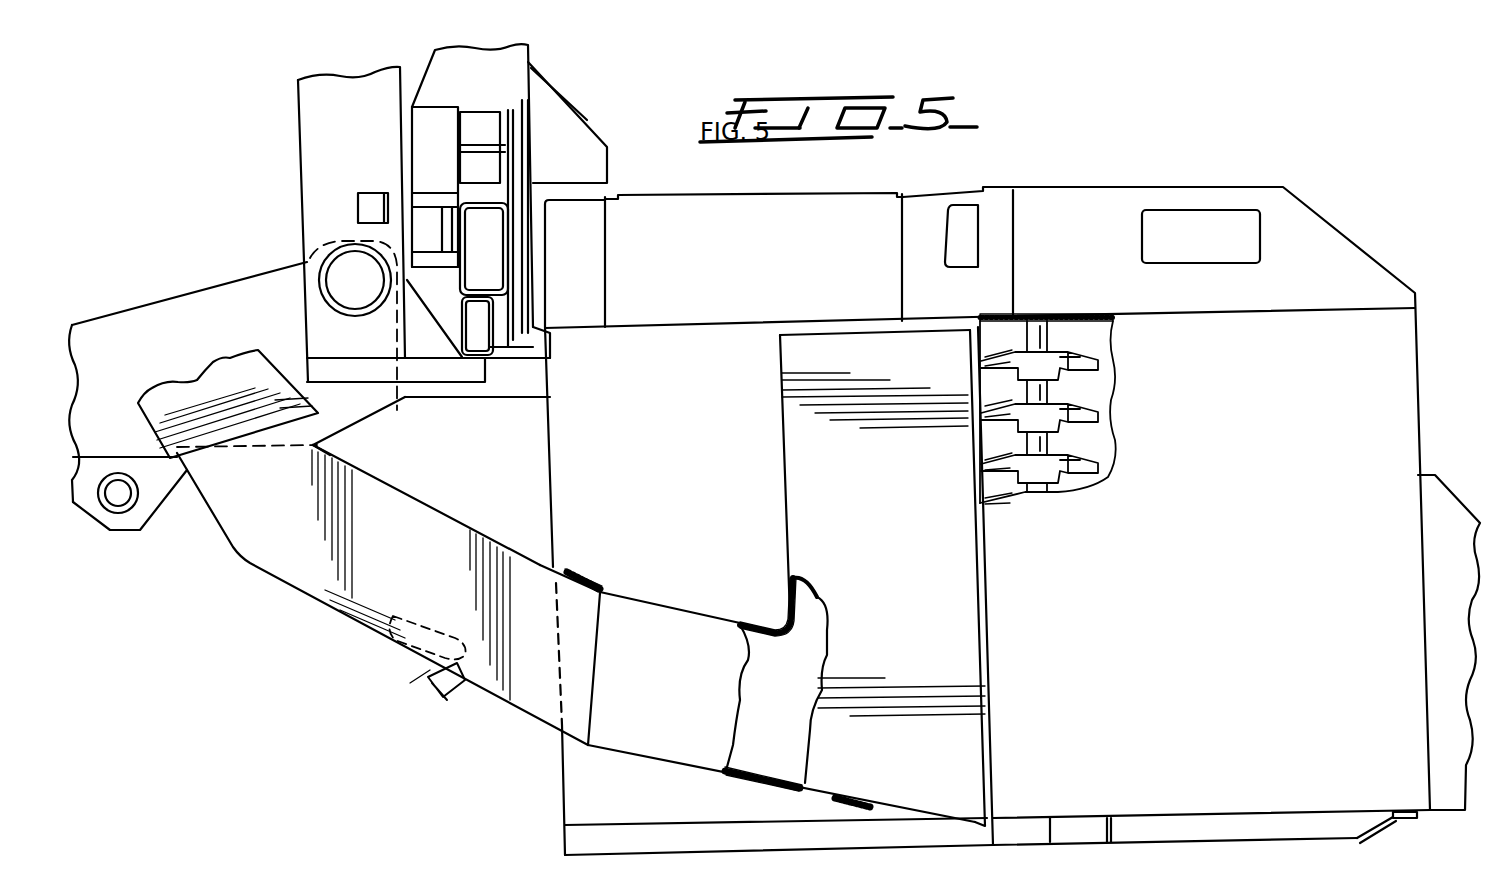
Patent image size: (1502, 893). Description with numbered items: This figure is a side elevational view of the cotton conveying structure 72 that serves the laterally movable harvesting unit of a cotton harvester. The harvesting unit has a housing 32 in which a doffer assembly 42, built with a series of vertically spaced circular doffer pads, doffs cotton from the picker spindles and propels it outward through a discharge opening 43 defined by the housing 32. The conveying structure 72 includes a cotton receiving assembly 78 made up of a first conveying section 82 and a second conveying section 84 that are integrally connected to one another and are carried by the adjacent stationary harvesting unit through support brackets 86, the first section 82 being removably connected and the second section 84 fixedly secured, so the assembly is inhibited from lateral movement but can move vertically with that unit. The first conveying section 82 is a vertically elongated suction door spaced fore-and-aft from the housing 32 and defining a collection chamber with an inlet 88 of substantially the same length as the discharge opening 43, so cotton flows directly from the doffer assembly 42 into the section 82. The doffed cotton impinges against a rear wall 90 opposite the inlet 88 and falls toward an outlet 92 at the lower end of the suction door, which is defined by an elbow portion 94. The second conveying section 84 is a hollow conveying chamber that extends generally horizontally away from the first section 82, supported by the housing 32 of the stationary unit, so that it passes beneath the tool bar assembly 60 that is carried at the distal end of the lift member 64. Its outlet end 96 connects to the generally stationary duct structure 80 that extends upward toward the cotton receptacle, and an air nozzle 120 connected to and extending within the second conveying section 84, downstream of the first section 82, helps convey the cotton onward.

The housing 32 is at (1105, 197).
The doffer assembly 42 is at (1115, 413).
The discharge opening 43 is at (1092, 322).
The tool bar assembly 60 is at (490, 367).
The lift member 64 is at (228, 290).
The conveying structure 72 is at (410, 688).
The cotton receiving assembly 78 is at (695, 770).
The duct structure 80 is at (197, 385).
The first conveying section 82 is at (930, 778).
The second conveying section 84 is at (296, 546).
The support bracket 86 is at (580, 575).
The inlet 88 is at (975, 548).
The rear wall 90 is at (820, 597).
The outlet 92 is at (768, 706).
The elbow portion 94 is at (758, 618).
The outlet end 96 is at (283, 436).
The air nozzle 120 is at (444, 612).